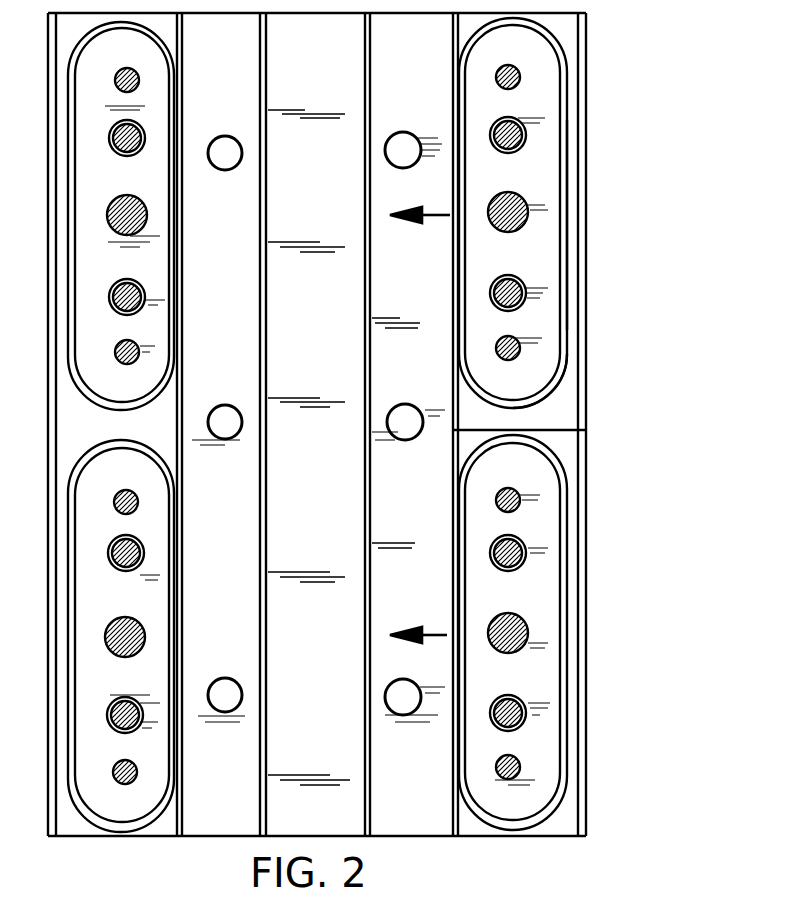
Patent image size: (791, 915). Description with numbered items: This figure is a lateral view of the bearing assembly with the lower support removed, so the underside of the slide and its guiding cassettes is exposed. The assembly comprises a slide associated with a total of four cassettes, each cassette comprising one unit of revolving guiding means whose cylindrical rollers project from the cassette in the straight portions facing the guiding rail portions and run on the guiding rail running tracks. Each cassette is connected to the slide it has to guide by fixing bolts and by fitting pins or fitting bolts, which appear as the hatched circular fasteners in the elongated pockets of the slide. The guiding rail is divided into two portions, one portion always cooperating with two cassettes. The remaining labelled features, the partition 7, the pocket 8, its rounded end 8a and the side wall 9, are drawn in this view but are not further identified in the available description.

The separation line 7 is at (597, 431).
The cavity 8 is at (540, 32).
The cavity end wall 8a is at (552, 383).
The side wall 9 is at (563, 287).